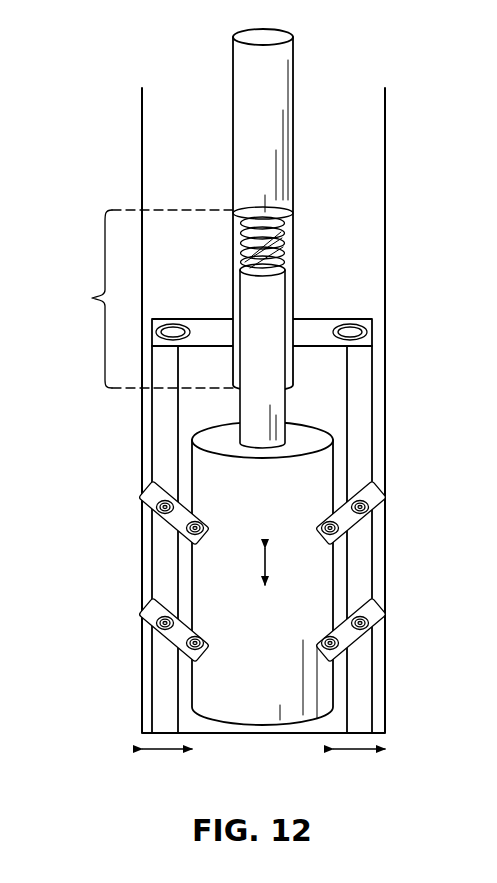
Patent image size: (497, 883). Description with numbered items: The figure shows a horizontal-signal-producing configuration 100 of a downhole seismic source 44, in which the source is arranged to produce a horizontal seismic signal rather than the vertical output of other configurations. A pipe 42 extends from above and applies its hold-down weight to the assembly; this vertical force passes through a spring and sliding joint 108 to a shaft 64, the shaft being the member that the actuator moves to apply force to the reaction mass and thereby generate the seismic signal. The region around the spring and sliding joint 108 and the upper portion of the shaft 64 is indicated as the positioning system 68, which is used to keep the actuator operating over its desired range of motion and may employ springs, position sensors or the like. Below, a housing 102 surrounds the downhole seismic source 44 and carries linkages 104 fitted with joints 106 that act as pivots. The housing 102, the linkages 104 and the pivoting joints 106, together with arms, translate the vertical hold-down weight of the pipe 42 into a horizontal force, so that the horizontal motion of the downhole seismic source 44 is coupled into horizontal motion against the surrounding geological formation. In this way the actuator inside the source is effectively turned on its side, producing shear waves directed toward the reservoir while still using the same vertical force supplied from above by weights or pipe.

The horizontal-signal-producing configuration 100 is at (124, 92).
The pipe 42 is at (293, 62).
The spring and sliding joint 108 is at (293, 270).
The positioning system 68 is at (92, 298).
The shaft 64 is at (288, 412).
The housing 102 is at (372, 400).
The joints 106 is at (146, 492).
The linkages 104 is at (163, 512).
The downhole seismic source 44 is at (335, 677).